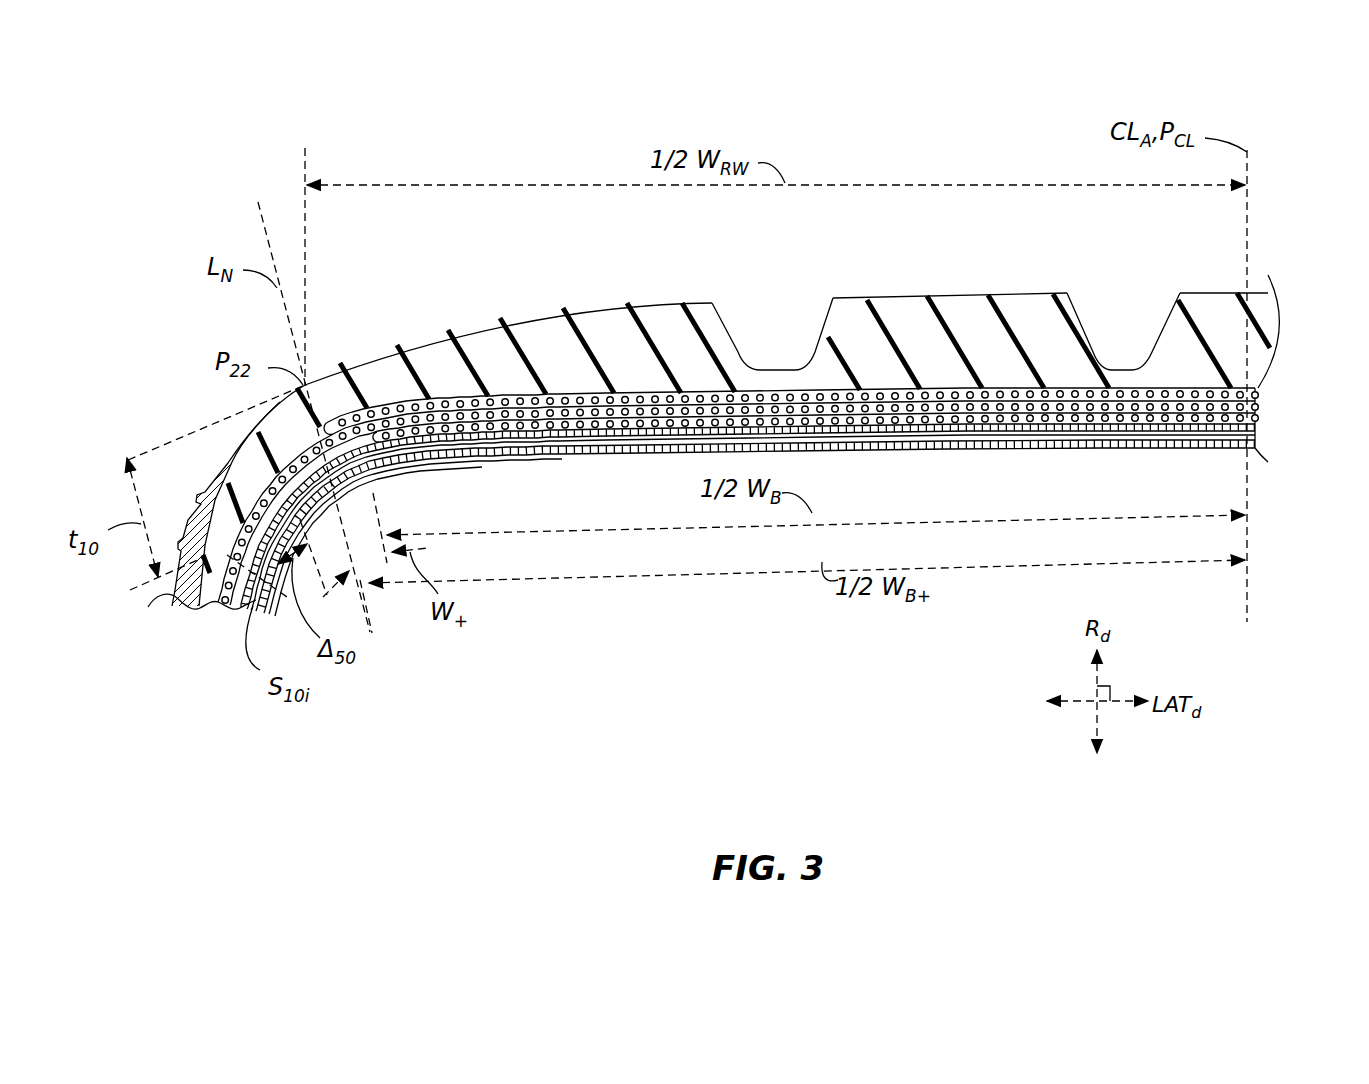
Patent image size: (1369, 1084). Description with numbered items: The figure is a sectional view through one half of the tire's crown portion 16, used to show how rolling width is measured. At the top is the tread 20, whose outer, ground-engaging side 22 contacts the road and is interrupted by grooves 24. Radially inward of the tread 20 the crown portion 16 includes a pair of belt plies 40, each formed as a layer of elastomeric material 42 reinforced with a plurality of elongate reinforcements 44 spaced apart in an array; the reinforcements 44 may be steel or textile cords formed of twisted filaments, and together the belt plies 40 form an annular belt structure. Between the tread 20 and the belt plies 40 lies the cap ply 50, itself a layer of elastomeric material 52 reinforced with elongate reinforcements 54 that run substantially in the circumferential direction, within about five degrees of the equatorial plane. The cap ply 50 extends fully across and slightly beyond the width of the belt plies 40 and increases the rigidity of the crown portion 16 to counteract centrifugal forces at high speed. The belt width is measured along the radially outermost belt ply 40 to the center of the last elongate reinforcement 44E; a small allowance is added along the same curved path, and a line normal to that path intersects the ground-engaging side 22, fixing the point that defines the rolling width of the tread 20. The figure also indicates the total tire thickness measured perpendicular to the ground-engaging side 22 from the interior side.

The crown portion 16 is at (1078, 452).
The tread 20 is at (1018, 293).
The outer, ground-engaging side 22 is at (598, 307).
The groove 24 is at (778, 331).
The belt plies 40 is at (1256, 407).
The layer of elastomeric material 42 is at (876, 410).
The elongate reinforcements 44 is at (928, 418).
The last elongate reinforcement 44E is at (350, 420).
The cap ply 50 is at (1256, 388).
The layer of elastomeric material 52 is at (587, 402).
The elongate reinforcements 54 is at (638, 402).